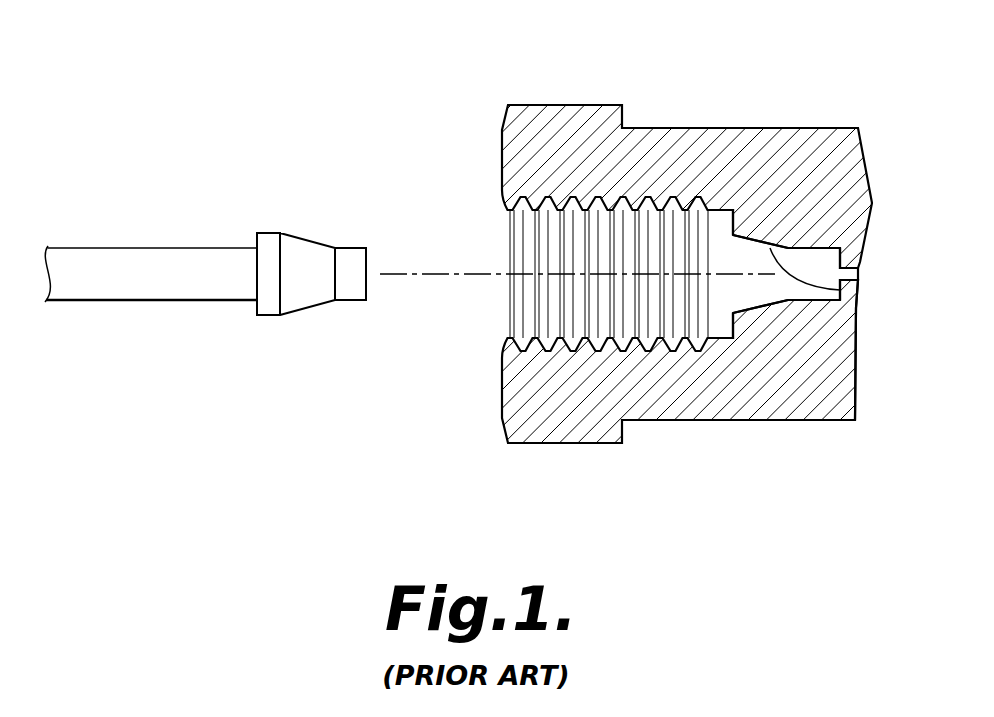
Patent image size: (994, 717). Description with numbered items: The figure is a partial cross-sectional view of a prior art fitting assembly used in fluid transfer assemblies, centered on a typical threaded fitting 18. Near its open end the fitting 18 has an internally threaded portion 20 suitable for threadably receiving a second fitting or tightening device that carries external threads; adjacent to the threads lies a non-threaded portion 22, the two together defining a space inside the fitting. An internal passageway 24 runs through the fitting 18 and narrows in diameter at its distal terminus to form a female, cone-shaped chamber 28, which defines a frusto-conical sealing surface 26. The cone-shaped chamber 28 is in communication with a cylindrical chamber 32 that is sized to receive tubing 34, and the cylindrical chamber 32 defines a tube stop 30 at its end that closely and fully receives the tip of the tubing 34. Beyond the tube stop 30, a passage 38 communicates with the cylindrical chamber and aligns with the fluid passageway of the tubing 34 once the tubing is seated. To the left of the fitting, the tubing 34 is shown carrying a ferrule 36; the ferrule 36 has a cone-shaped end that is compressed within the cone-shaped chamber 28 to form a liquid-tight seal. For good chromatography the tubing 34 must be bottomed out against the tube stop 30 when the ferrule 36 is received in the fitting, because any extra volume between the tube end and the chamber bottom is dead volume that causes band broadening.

The threaded fitting 18 is at (683, 110).
The internally threaded portion 20 is at (615, 205).
The non-threaded portion 22 is at (736, 212).
The internal passageway 24 is at (518, 292).
The frusto-conical sealing surface 26 is at (856, 293).
The cone-shaped chamber 28 is at (757, 257).
The tube stop 30 is at (859, 266).
The cylindrical chamber 32 is at (820, 267).
The tubing 34 is at (176, 250).
The ferrule 36 is at (300, 243).
The passage 38 is at (858, 277).